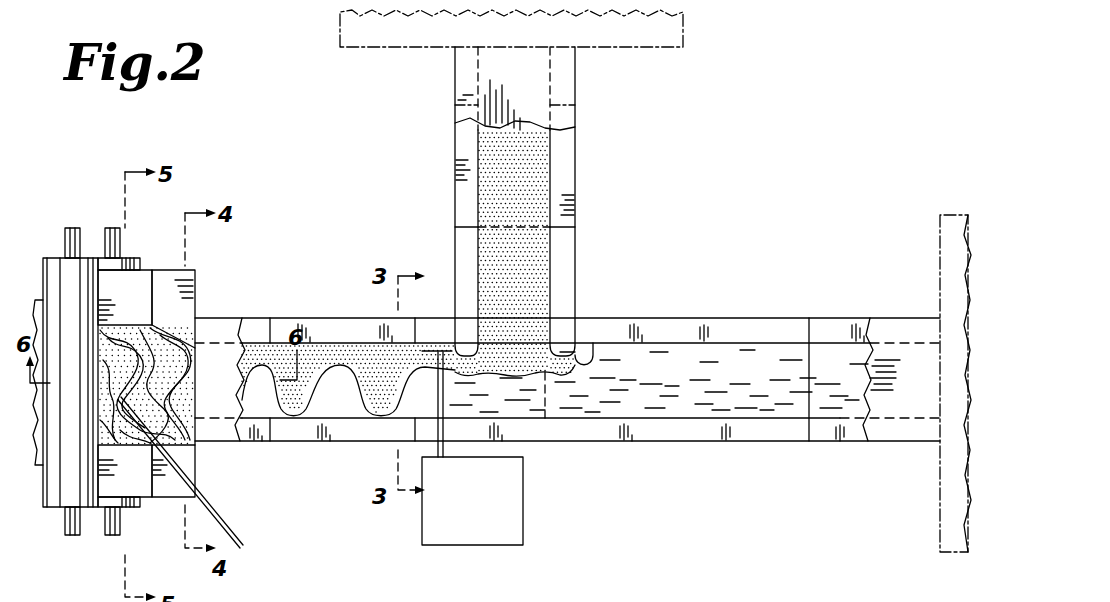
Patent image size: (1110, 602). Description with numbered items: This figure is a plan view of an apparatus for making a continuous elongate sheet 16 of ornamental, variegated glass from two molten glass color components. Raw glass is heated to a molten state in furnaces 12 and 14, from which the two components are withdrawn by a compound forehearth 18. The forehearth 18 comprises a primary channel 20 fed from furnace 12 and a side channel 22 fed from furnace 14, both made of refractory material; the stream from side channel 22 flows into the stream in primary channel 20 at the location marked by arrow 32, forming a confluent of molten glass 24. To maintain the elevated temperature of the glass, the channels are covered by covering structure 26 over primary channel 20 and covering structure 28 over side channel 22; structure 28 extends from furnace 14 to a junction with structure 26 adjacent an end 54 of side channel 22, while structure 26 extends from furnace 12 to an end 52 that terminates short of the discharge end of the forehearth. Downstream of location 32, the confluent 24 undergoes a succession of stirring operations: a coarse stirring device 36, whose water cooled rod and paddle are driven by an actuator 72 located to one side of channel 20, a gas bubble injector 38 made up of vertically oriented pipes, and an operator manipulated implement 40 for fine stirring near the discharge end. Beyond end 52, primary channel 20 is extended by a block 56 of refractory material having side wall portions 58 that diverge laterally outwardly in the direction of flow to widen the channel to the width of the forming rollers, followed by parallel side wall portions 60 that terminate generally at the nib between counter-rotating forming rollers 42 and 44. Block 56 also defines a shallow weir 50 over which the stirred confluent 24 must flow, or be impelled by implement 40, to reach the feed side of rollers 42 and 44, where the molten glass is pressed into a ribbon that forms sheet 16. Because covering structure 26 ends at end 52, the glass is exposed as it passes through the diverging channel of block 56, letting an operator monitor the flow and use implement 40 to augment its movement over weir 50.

The furnace 12 is at (940, 240).
The furnace 14 is at (683, 36).
The continuous elongate sheet 16 is at (47, 508).
The compound forehearth 18 is at (668, 266).
The primary channel 20 is at (758, 441).
The side channel 22 is at (542, 270).
The confluent of molten glass 24 is at (322, 345).
The covering structure 26 is at (250, 328).
The covering structure 28 is at (565, 90).
The merge location 32 is at (527, 395).
The coarse stirring device 36 is at (415, 453).
The gas bubble injector 38 is at (188, 318).
The operator manipulated implement 40 is at (198, 490).
The forming roller 42 is at (68, 515).
The forming roller 44 is at (105, 515).
The weir 50 is at (153, 333).
The end of covering structure 52 is at (195, 475).
The end of side channel 54 is at (590, 342).
The block of refractory material 56 is at (175, 478).
The diverging side wall portions 58 is at (171, 438).
The parallel side wall portions 60 is at (138, 325).
The actuator 72 is at (472, 501).